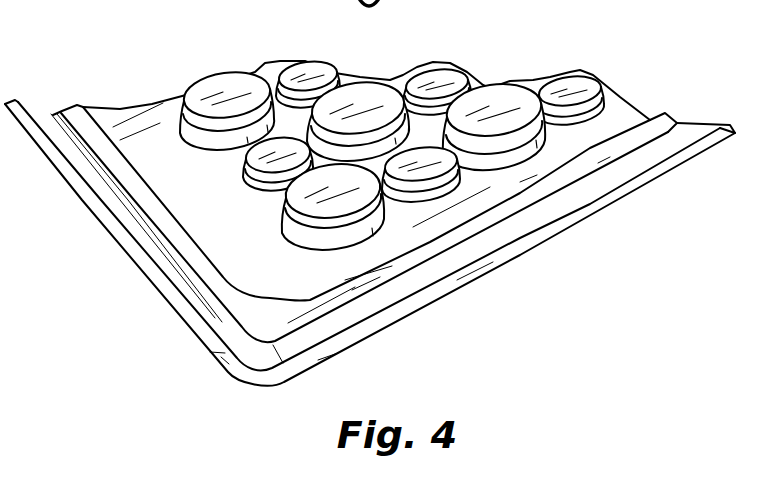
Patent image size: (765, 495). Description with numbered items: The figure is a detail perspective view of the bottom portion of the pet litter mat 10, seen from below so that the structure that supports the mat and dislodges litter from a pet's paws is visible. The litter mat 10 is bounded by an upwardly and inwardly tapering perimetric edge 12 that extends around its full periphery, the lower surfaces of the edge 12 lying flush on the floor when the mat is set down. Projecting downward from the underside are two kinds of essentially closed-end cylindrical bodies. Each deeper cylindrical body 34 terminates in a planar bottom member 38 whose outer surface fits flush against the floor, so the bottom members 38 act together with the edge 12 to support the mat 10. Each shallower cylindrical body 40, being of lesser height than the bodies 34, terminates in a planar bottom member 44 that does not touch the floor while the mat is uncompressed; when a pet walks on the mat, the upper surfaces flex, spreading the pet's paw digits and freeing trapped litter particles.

The litter mat 10 is at (595, 35).
The perimetric edge 12 is at (594, 216).
The cylindrical body 34 is at (197, 133).
The planar bottom member 38 is at (495, 100).
The cylindrical body 40 is at (606, 101).
The planar bottom member 44 is at (302, 73).